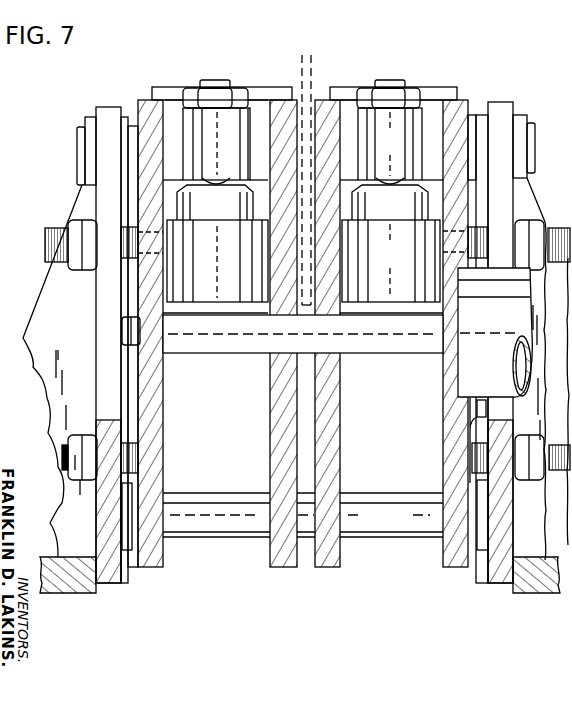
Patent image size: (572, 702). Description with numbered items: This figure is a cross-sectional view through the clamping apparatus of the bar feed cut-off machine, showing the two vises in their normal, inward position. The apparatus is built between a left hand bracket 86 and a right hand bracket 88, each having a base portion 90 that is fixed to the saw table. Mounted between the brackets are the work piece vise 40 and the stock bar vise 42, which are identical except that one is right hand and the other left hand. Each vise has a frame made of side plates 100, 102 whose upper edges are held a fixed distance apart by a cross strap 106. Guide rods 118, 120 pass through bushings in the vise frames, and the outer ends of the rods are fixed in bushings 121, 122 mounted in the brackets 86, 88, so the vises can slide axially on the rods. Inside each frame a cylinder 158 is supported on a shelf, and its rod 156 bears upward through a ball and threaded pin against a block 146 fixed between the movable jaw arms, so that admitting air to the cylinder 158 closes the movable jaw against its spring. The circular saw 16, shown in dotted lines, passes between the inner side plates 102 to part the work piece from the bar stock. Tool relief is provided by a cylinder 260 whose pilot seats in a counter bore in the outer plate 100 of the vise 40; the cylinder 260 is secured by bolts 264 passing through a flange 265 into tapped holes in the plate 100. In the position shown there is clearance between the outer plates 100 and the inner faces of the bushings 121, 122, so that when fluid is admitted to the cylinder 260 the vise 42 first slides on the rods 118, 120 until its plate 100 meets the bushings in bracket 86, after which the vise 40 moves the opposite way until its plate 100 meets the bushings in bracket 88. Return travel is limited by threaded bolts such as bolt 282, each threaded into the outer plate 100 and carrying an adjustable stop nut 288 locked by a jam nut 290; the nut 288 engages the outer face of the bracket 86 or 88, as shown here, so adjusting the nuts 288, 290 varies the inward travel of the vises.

The circular saw 16 is at (311, 75).
The work piece vise 40 is at (396, 72).
The stock bar vise 42 is at (223, 72).
The left hand bracket 86 is at (108, 107).
The right hand bracket 88 is at (505, 103).
The base portion 90 is at (527, 591).
The side plate 100 is at (152, 565).
The side plate 102 is at (323, 562).
The cross strap 106 is at (173, 93).
The guide rod 118 is at (473, 122).
The guide rod 120 is at (403, 526).
The bushing 121 is at (123, 118).
The bushing 122 is at (127, 550).
The block 146 is at (401, 151).
The rod 156 is at (406, 213).
The cylinder 158 is at (406, 265).
The cylinder 260 is at (497, 331).
The bolt 264 is at (470, 436).
The flange 265 is at (472, 410).
The threaded bolt 282 is at (552, 228).
The nut 288 is at (84, 271).
The jam nut 290 is at (546, 290).